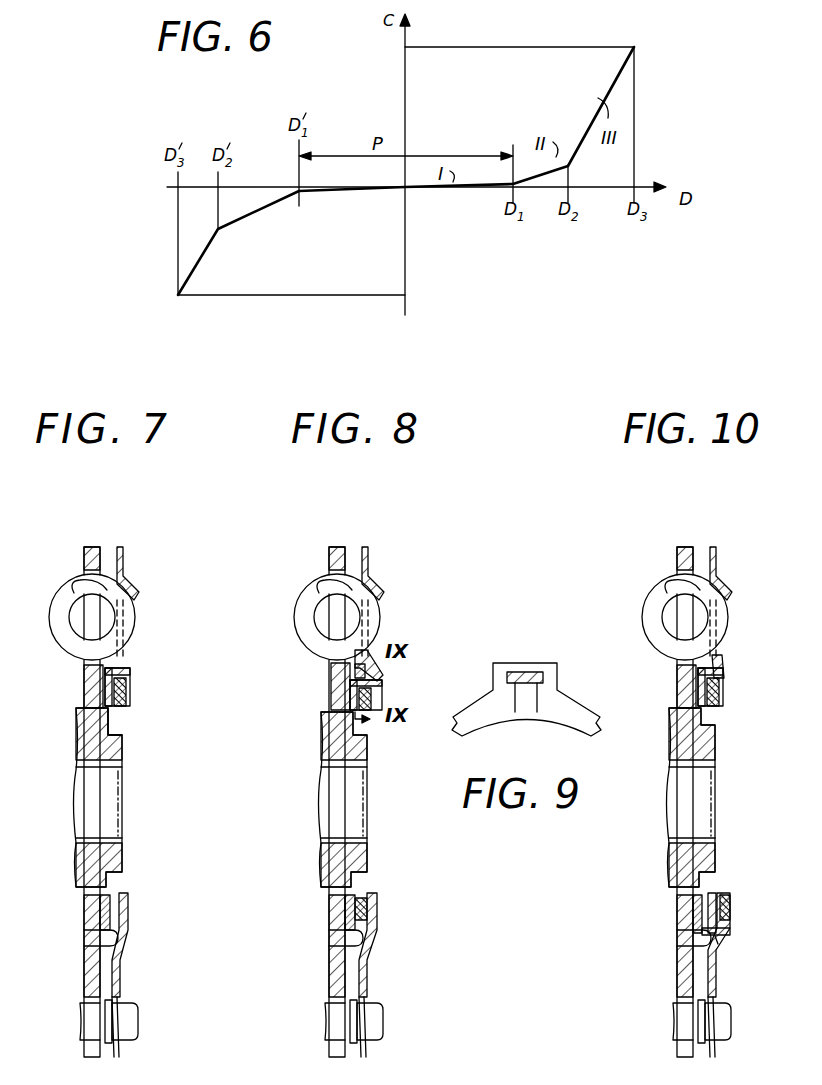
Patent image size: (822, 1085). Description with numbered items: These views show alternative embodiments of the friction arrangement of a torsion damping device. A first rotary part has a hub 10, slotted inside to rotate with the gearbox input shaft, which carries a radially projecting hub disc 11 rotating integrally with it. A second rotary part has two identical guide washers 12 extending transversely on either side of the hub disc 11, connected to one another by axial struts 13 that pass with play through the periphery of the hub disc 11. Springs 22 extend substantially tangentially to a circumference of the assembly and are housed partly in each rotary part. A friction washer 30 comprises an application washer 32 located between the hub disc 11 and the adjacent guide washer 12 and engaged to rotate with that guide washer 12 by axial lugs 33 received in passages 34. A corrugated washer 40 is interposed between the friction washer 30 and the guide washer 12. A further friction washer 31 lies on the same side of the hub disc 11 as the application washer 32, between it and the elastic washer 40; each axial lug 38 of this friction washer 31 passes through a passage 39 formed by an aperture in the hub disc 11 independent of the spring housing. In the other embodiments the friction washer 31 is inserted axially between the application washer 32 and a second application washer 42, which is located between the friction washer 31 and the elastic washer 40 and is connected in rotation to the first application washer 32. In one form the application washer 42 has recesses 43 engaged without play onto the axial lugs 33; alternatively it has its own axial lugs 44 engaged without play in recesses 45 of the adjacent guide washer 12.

In FIG. 7, the hub 10 is at (72, 797).
In FIG. 8, the hub 10 is at (321, 799).
In FIG. 10, the hub 10 is at (732, 797).
In FIG. 7, the hub disc 11 is at (96, 778).
In FIG. 8, the hub disc 11 is at (341, 778).
In FIG. 10, the hub disc 11 is at (689, 778).
In FIG. 7, the guide washer 12 is at (133, 573).
In FIG. 8, the guide washer 12 is at (376, 574).
In FIG. 10, the guide washer 12 is at (726, 582).
In FIG. 7, the axial strut 13 is at (127, 1004).
In FIG. 8, the axial strut 13 is at (373, 1004).
In FIG. 10, the axial strut 13 is at (725, 1004).
In FIG. 7, the spring 22 is at (84, 605).
In FIG. 8, the spring 22 is at (330, 605).
In FIG. 10, the spring 22 is at (678, 605).
In FIG. 7, the friction washer 30 is at (135, 728).
In FIG. 7, the friction washer 31 is at (132, 889).
In FIG. 8, the friction washer 31 is at (377, 889).
In FIG. 10, the friction washer 31 is at (663, 901).
In FIG. 7, the application washer 32 is at (74, 686).
In FIG. 8, the application washer 32 is at (317, 686).
In FIG. 9, the application washer 32 is at (530, 672).
In FIG. 10, the application washer 32 is at (667, 686).
In FIG. 7, the axial lug 33 is at (139, 670).
In FIG. 8, the axial lug 33 is at (394, 680).
In FIG. 9, the axial lug 33 is at (538, 685).
In FIG. 10, the axial lug 33 is at (739, 673).
In FIG. 7, the passage 34 is at (145, 692).
In FIG. 8, the passage 34 is at (400, 692).
In FIG. 10, the passage 34 is at (747, 690).
In FIG. 7, the axial lug 38 is at (82, 927).
In FIG. 8, the axial lug 38 is at (327, 927).
In FIG. 10, the axial lug 38 is at (675, 925).
In FIG. 7, the passage 39 is at (73, 946).
In FIG. 8, the passage 39 is at (318, 946).
In FIG. 10, the passage 39 is at (666, 946).
In FIG. 7, the corrugated washer 40 is at (143, 967).
In FIG. 8, the corrugated washer 40 is at (390, 967).
In FIG. 10, the corrugated washer 40 is at (747, 963).
In FIG. 8, the application washer 42 is at (331, 657).
In FIG. 9, the application washer 42 is at (582, 698).
In FIG. 10, the application washer 42 is at (733, 887).
In FIG. 8, the recess 43 is at (330, 673).
In FIG. 9, the recess 43 is at (517, 685).
In FIG. 10, the axial lug 44 is at (748, 923).
In FIG. 10, the recess 45 is at (752, 951).